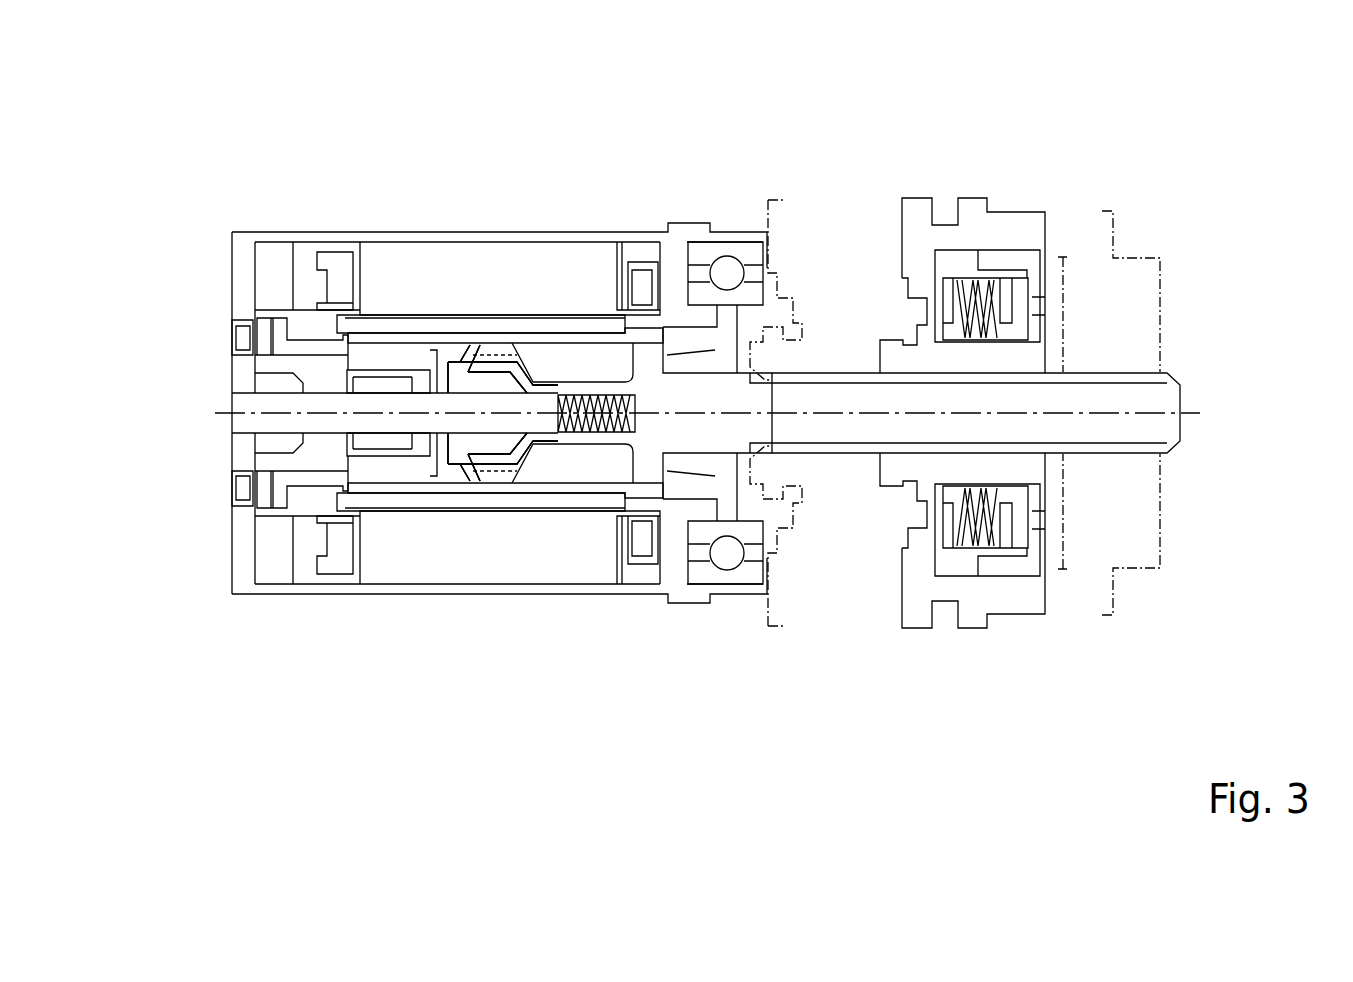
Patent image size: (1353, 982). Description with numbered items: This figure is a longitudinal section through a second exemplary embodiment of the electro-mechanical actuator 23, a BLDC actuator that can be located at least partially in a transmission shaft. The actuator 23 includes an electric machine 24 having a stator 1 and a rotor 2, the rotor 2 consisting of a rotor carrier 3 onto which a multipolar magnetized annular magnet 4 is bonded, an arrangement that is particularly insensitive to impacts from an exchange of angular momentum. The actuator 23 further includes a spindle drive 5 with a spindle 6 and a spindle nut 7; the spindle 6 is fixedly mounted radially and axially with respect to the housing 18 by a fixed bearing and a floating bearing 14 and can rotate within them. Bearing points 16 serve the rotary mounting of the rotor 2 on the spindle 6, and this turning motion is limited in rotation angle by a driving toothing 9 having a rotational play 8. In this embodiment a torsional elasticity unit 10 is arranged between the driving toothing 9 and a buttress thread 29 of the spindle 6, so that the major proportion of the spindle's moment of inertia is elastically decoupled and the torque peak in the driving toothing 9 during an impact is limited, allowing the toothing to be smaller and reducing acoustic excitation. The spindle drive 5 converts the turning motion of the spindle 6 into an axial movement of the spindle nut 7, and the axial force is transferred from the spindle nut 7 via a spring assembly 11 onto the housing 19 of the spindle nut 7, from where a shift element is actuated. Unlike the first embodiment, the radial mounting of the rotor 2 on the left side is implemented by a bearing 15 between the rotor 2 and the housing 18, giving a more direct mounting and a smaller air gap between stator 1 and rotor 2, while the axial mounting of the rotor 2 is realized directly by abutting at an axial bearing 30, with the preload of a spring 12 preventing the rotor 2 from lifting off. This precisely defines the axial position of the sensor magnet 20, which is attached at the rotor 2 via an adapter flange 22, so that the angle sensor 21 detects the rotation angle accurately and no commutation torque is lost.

The stator 1 is at (470, 280).
The rotor 2 is at (635, 329).
The rotor carrier 3 is at (597, 340).
The annular magnet 4 is at (538, 325).
The spindle drive 5 is at (1080, 361).
The spindle 6 is at (1157, 400).
The spindle nut 7 is at (1030, 358).
The rotational play 8 is at (497, 477).
The driving toothing 9 is at (497, 477).
The torsional elasticity unit 10 is at (557, 433).
The spring assembly 11 is at (997, 550).
The spring 12 is at (600, 437).
The bearing 14 is at (727, 580).
The bearing 15 is at (373, 440).
The bearing point 16 is at (650, 487).
The housing 18 is at (348, 587).
The housing of the spindle nut 19 is at (968, 593).
The sensor magnet 20 is at (248, 332).
The angle sensor 21 is at (243, 345).
The adapter flange 22 is at (307, 478).
The electro-mechanical actuator 23 is at (235, 220).
The electric machine 24 is at (352, 249).
The buttress thread 29 is at (825, 380).
The axial bearing 30 is at (443, 407).